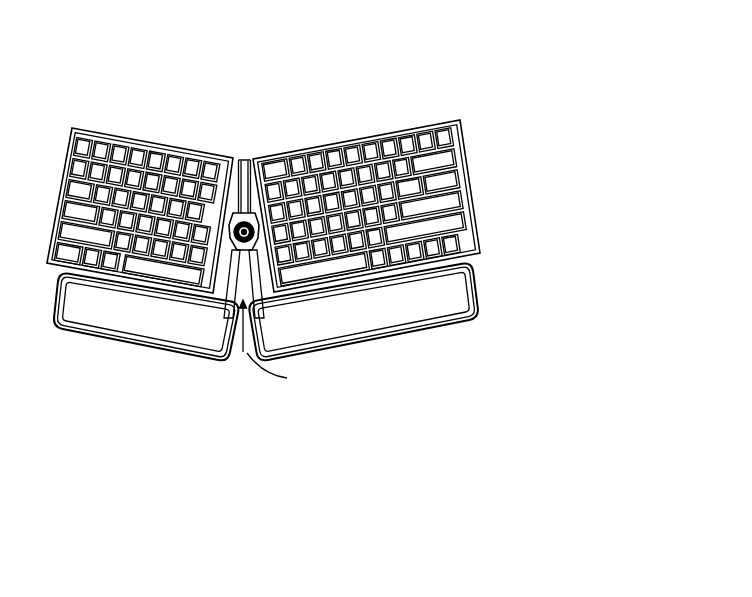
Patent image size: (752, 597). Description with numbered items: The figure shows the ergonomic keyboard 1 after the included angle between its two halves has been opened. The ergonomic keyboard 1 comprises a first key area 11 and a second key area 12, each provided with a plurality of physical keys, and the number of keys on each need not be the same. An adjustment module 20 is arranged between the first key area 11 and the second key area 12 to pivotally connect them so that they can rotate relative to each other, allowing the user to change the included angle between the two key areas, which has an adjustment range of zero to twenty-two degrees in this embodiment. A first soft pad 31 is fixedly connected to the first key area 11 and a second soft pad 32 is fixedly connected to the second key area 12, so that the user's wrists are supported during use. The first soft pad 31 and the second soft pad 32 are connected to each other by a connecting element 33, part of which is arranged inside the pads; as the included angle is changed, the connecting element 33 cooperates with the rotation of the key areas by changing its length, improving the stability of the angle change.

The ergonomic keyboard 1 is at (470, 86).
The first key area 11 is at (337, 147).
The second key area 12 is at (140, 138).
The adjustment module 20 is at (247, 185).
The first soft pad 31 is at (373, 320).
The second soft pad 32 is at (108, 327).
The connecting element 33 is at (243, 353).